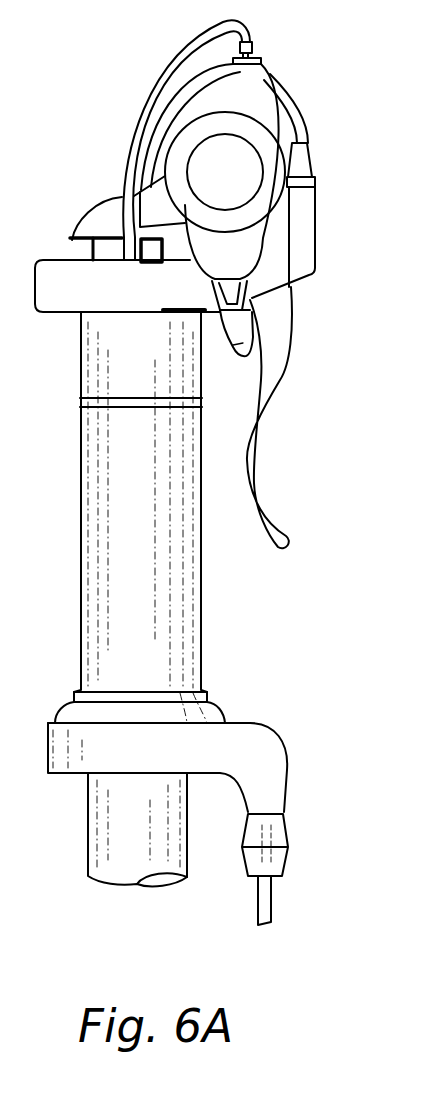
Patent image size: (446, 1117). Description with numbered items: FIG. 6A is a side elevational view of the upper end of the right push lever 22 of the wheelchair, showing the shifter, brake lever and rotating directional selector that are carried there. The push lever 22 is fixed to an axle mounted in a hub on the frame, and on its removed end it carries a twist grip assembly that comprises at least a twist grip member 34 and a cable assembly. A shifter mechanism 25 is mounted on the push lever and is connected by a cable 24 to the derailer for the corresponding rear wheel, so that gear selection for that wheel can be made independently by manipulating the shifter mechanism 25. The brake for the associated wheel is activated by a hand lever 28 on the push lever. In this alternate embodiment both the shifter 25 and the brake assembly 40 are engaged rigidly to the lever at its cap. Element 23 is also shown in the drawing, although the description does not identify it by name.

The push lever 22 is at (92, 817).
The small outlet tube 23 is at (277, 900).
The cable 24 is at (150, 87).
The shifter mechanism 25 is at (218, 327).
The hand lever 28 is at (267, 485).
The twist grip member 34 is at (203, 580).
The brake assembly 40 is at (290, 250).